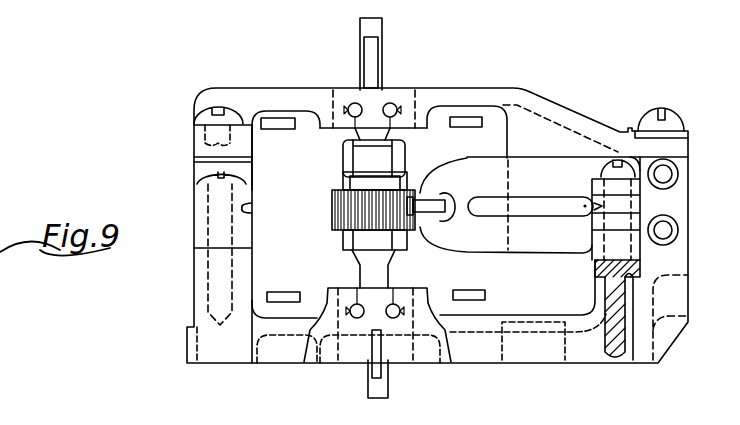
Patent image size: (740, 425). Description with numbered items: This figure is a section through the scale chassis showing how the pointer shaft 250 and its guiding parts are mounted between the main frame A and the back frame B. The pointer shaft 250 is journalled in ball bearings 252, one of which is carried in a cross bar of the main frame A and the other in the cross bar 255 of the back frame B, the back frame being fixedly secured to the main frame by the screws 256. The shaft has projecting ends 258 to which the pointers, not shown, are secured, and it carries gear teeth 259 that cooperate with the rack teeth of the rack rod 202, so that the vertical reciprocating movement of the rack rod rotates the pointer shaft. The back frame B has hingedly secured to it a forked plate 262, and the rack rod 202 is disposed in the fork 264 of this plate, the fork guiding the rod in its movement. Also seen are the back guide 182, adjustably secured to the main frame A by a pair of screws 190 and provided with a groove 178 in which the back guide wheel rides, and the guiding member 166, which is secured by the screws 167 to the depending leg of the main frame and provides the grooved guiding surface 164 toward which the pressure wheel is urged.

The cross bar 255 is at (443, 91).
The back frame B is at (537, 103).
The main frame A is at (268, 357).
The screws 256 is at (213, 118).
The ball bearings 252 is at (350, 93).
The projecting ends 258 is at (380, 48).
The pointer shaft 250 is at (365, 262).
The gear teeth 259 is at (332, 222).
The fork 264 is at (445, 188).
The forked plate 262 is at (472, 240).
The rack rod 202 is at (448, 190).
The groove 178 is at (597, 211).
The back guide 182 is at (598, 190).
The screws 190 is at (621, 157).
The guiding surface 164 is at (255, 207).
The guiding member 166 is at (193, 217).
The screws 167 is at (220, 283).